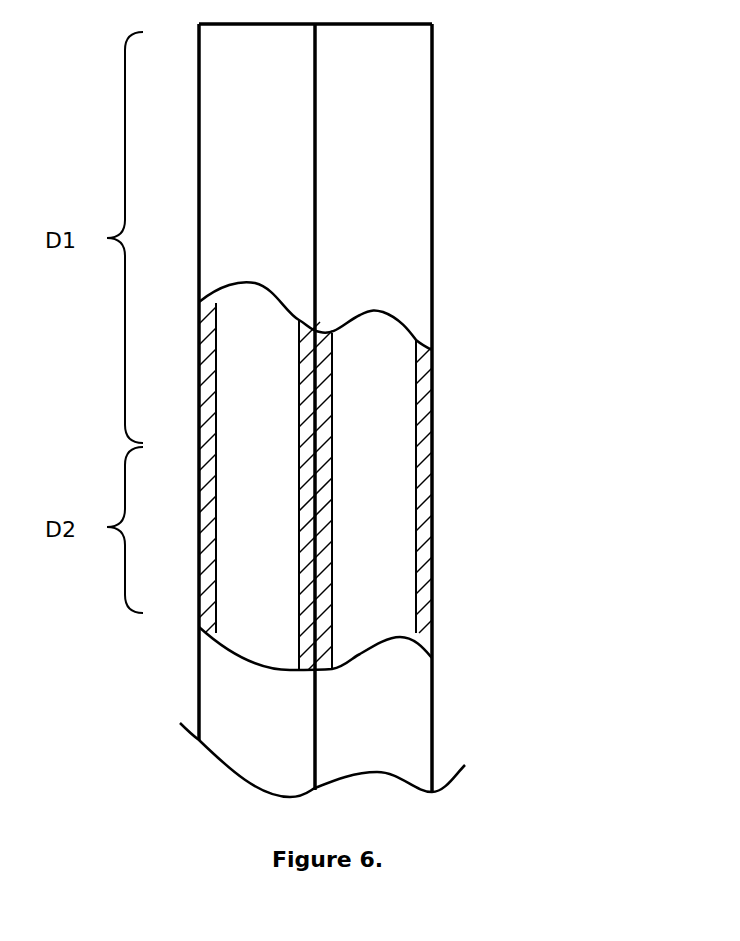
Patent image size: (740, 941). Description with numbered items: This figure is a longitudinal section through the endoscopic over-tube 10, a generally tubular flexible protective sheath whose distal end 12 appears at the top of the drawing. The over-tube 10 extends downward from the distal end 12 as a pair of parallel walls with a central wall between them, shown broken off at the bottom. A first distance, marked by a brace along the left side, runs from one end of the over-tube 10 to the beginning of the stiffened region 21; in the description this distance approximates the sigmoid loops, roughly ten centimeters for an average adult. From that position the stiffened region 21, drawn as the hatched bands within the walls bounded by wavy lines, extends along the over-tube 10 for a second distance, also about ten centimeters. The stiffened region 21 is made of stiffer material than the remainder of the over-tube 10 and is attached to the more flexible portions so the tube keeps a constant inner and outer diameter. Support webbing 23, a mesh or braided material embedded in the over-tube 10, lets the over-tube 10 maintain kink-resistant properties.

The endoscopic over-tube 10 is at (448, 160).
The distal end 12 is at (442, 32).
The stiffened region 21 is at (430, 561).
The support webbing 23 is at (387, 548).